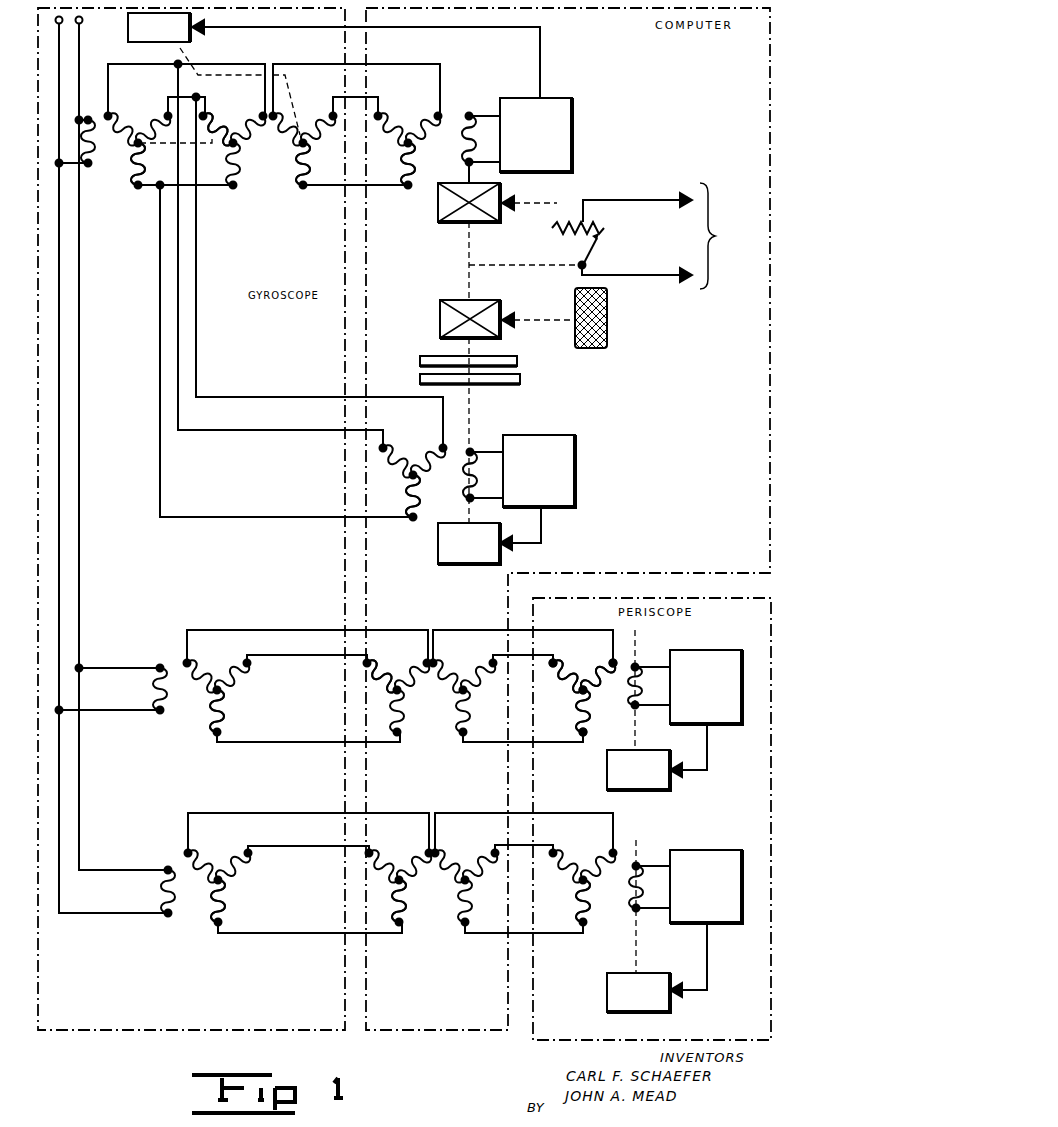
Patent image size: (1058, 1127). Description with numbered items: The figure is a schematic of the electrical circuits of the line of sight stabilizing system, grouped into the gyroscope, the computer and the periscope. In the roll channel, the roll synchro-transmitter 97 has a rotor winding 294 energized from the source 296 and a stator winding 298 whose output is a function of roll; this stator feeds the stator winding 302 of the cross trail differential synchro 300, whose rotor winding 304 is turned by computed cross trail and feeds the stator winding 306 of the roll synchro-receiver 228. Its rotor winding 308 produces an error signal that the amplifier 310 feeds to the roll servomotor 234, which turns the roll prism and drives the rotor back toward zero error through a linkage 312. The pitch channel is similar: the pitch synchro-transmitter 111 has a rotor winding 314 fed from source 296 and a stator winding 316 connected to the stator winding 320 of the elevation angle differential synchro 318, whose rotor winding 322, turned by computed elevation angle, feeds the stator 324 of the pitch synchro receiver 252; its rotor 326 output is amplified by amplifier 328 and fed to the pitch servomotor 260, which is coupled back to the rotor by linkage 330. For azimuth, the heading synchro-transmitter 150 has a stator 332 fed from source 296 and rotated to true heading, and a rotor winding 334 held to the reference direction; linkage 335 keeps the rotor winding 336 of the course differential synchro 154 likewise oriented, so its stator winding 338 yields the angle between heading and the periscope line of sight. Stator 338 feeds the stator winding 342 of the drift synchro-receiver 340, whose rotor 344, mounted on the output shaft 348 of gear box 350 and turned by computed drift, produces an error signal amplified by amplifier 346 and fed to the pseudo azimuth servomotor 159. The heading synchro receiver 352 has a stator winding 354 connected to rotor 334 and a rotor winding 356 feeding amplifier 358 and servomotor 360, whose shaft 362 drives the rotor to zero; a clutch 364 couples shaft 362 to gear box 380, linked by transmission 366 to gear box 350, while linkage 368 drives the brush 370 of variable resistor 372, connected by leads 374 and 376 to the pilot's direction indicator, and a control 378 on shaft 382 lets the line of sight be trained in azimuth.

The source of electrical energy 296 is at (83, 24).
The pseudo azimuth servomotor 159 is at (188, 43).
The stator 332 is at (91, 122).
The heading synchro-transmitter 150 is at (116, 172).
The rotor winding 334 is at (138, 190).
The linkage 335 is at (218, 132).
The rotor winding 336 is at (233, 190).
The course differential synchro 154 is at (272, 196).
The stator winding 338 is at (303, 188).
The stator winding 342 is at (404, 165).
The drift synchro-receiver 340 is at (426, 192).
The rotor 344 is at (470, 114).
The amplifier 346 is at (573, 135).
The output shaft 348 is at (467, 172).
The gear box 350 is at (486, 224).
The lead 374 is at (655, 198).
The variable resistor 372 is at (605, 222).
The brush 370 is at (590, 262).
The transmission 366 is at (466, 287).
The linkage 368 is at (520, 268).
The lead 376 is at (640, 278).
The shaft 382 is at (568, 319).
The control 378 is at (608, 335).
The gear box 380 is at (502, 336).
The shaft 362 is at (470, 410).
The clutch 364 is at (521, 384).
The rotor winding 356 is at (472, 450).
The amplifier 358 is at (576, 472).
The stator winding 354 is at (410, 505).
The heading synchro receiver 352 is at (428, 520).
The servomotor 360 is at (466, 566).
The rotor winding 294 is at (162, 666).
The roll synchro-transmitter 97 is at (178, 712).
The stator winding 298 is at (212, 718).
The stator winding 302 is at (395, 684).
The cross trail differential synchro 300 is at (430, 718).
The rotor winding 304 is at (466, 694).
The stator winding 306 is at (582, 695).
The rotor winding 308 is at (645, 665).
The amplifier 310 is at (720, 658).
The shaft 312 is at (637, 738).
The roll synchro-receiver 228 is at (605, 735).
The roll servomotor 234 is at (655, 792).
The rotor winding 314 is at (166, 916).
The pitch synchro-transmitter 111 is at (193, 942).
The stator winding 316 is at (218, 928).
The stator winding 320 is at (400, 928).
The elevation angle differential synchro 318 is at (438, 928).
The rotor winding 322 is at (465, 928).
The stator 324 is at (582, 928).
The rotor 326 is at (640, 912).
The amplifier 328 is at (728, 925).
The linkage 330 is at (638, 958).
The pitch synchro receiver 252 is at (605, 948).
The pitch servomotor 260 is at (660, 1013).